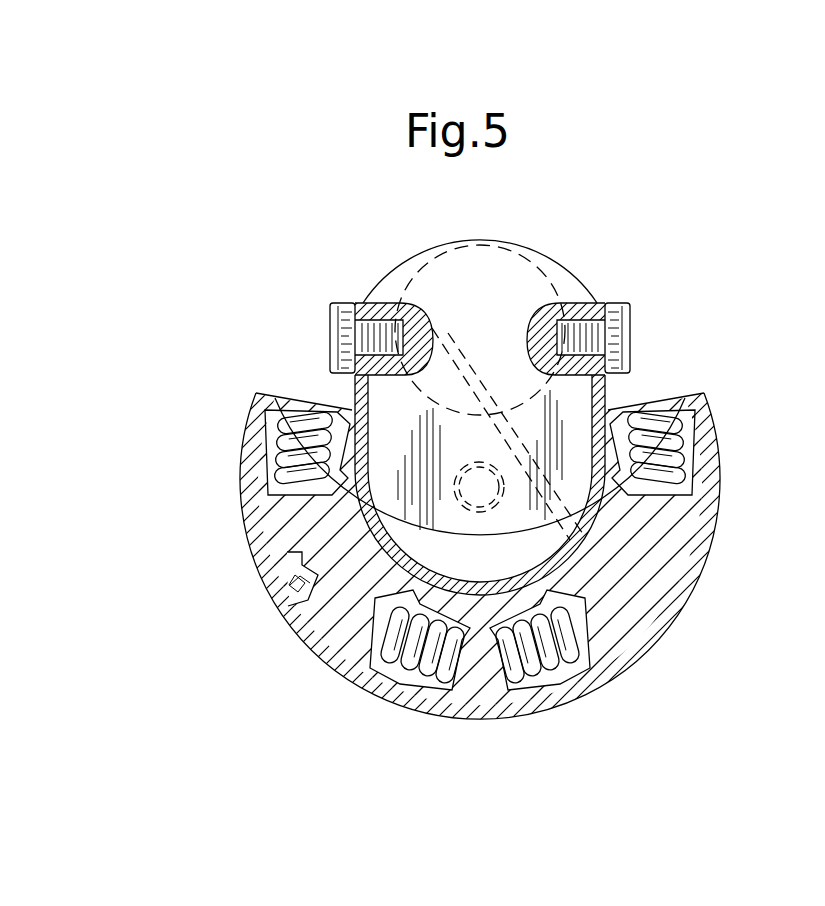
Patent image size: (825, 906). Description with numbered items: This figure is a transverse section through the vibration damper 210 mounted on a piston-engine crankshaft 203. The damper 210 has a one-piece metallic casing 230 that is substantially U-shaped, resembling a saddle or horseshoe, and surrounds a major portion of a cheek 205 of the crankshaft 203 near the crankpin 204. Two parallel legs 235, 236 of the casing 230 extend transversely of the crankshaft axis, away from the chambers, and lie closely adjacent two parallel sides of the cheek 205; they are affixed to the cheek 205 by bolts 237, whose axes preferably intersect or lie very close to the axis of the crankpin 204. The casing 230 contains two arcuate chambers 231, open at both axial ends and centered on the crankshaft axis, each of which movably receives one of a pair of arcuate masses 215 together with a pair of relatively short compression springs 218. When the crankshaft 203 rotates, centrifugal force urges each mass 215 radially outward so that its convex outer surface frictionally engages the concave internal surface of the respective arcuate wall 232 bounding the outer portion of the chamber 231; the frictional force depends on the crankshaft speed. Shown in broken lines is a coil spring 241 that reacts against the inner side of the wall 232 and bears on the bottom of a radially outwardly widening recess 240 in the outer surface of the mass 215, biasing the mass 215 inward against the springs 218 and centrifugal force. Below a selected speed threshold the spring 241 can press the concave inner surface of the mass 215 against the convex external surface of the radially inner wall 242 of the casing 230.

The crankshaft 203 is at (493, 243).
The crankpin 204 is at (535, 260).
The cheek 205 is at (562, 422).
The damper 210 is at (300, 671).
The arcuate masses 215 is at (338, 608).
The compression springs 218 is at (280, 460).
The casing 230 is at (632, 662).
The arcuate chambers 231 is at (332, 428).
The arcuate walls 232 is at (267, 563).
The leg 235 is at (597, 313).
The leg 236 is at (363, 303).
The bolts 237 is at (340, 312).
The recess 240 is at (273, 548).
The coil spring 241 is at (287, 587).
The radially inner wall 242 is at (386, 557).